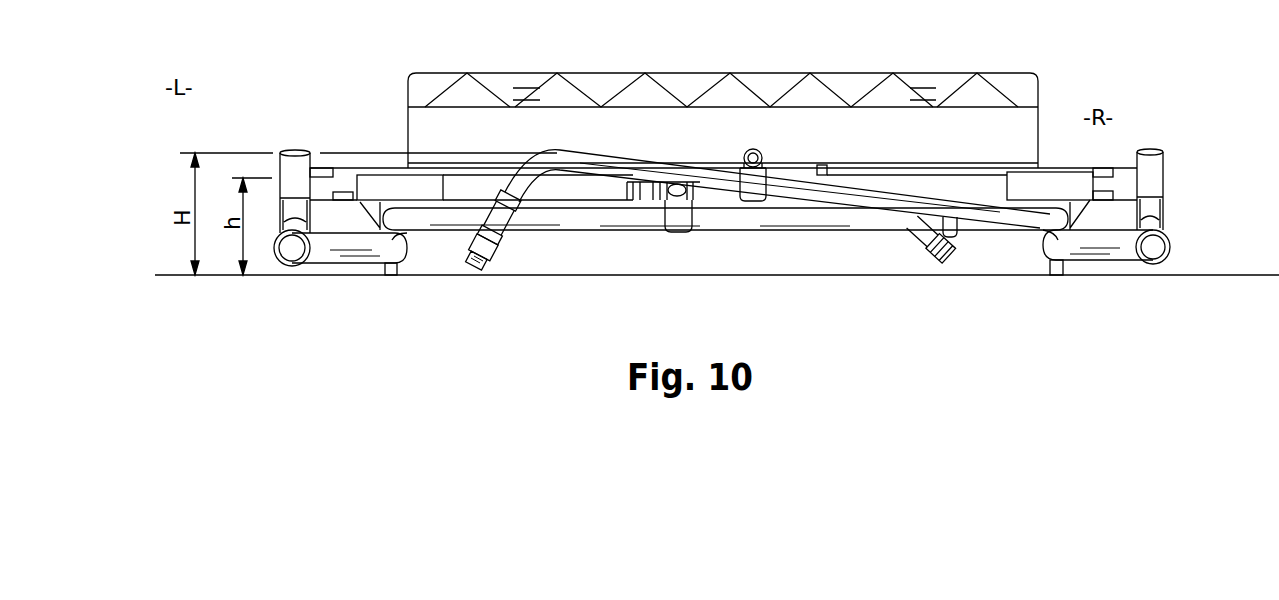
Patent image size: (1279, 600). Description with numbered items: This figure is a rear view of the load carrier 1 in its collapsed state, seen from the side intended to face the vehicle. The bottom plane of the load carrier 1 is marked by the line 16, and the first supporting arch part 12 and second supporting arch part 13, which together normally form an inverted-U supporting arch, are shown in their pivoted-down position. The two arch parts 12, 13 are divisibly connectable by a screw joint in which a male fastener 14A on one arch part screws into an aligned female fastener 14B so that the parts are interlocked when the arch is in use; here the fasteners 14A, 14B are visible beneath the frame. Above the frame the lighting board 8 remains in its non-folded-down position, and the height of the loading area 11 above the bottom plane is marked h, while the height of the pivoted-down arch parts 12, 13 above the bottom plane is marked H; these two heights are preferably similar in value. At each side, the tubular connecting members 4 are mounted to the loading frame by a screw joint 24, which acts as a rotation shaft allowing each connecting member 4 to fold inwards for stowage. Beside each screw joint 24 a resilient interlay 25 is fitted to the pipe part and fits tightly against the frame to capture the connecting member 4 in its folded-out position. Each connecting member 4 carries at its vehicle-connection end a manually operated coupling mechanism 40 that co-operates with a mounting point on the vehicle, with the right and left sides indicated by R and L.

The load carrier 1 is at (497, 52).
The connecting members 4 is at (290, 252).
The lighting board 8 is at (810, 120).
The loading area 11 is at (358, 130).
The first supporting arch part 12 is at (722, 214).
The second supporting arch part 13 is at (987, 216).
The male fastener 14A is at (496, 254).
The female fastener 14B is at (915, 248).
The bottom plane line 16 is at (1223, 273).
The screw joint 24 is at (390, 276).
The interlay 25 is at (410, 238).
The coupling mechanism 40 is at (296, 170).